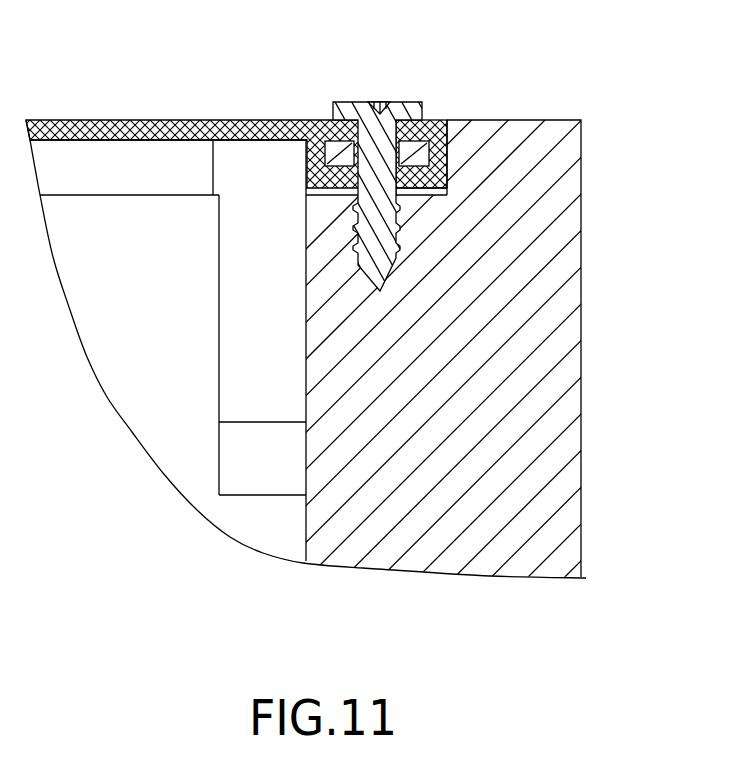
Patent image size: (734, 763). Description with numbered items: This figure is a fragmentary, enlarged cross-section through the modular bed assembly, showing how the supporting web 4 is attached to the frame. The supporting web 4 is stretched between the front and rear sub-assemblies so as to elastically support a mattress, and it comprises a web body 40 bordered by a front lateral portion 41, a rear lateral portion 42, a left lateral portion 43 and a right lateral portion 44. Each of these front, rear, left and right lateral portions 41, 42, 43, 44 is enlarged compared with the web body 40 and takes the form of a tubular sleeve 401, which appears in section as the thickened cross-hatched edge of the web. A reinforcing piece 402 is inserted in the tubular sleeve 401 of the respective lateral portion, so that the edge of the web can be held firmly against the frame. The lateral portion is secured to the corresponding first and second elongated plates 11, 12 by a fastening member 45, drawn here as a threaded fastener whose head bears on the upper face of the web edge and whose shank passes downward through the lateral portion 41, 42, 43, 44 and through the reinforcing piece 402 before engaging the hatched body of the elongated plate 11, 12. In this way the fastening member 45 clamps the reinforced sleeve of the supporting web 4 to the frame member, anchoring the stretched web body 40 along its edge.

The supporting web 4 is at (78, 114).
The web body 40 is at (192, 106).
The front lateral portion 41 is at (473, 381).
The rear lateral portion 42 is at (473, 381).
The left lateral portion 43 is at (473, 381).
The right lateral portion 44 is at (473, 381).
The fastening member 45 is at (407, 100).
The tubular sleeve 401 is at (418, 153).
The reinforcing piece 402 is at (448, 192).
The first elongated plate 11 is at (306, 349).
The second elongated plate 12 is at (306, 338).